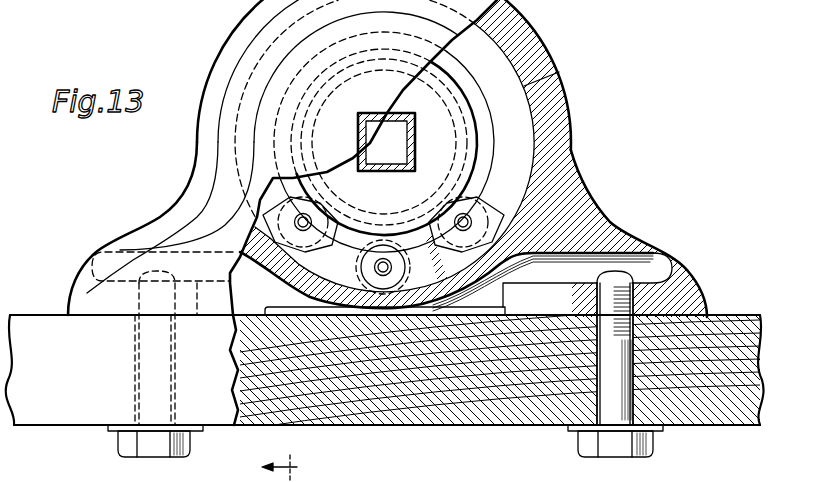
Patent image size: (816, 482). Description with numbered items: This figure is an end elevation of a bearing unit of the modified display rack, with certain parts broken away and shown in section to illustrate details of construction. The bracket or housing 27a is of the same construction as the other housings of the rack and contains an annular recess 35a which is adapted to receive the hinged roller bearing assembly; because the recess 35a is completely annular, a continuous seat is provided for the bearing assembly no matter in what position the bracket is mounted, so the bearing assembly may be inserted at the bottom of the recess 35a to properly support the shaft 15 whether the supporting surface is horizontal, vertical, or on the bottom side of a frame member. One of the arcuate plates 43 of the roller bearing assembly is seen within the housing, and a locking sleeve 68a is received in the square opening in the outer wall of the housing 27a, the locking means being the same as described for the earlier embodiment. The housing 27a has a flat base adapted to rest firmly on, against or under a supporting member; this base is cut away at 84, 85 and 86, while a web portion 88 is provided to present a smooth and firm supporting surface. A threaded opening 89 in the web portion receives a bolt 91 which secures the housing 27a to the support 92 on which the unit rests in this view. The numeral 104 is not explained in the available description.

The housing 27a is at (538, 32).
The annular recess 35a is at (556, 76).
The locking sleeve 68a is at (415, 136).
The arcuate plate 43 is at (472, 212).
The cut-away portion of base 84 is at (640, 266).
The cut-away portion of base 85 is at (250, 297).
The cut-away portion of base 86 is at (500, 308).
The web portion 88 is at (100, 273).
The threaded opening 89 is at (231, 276).
The bolt 91 is at (192, 452).
The support 92 is at (392, 418).
The shaft 15 is at (291, 468).
The base member 104 is at (388, 479).